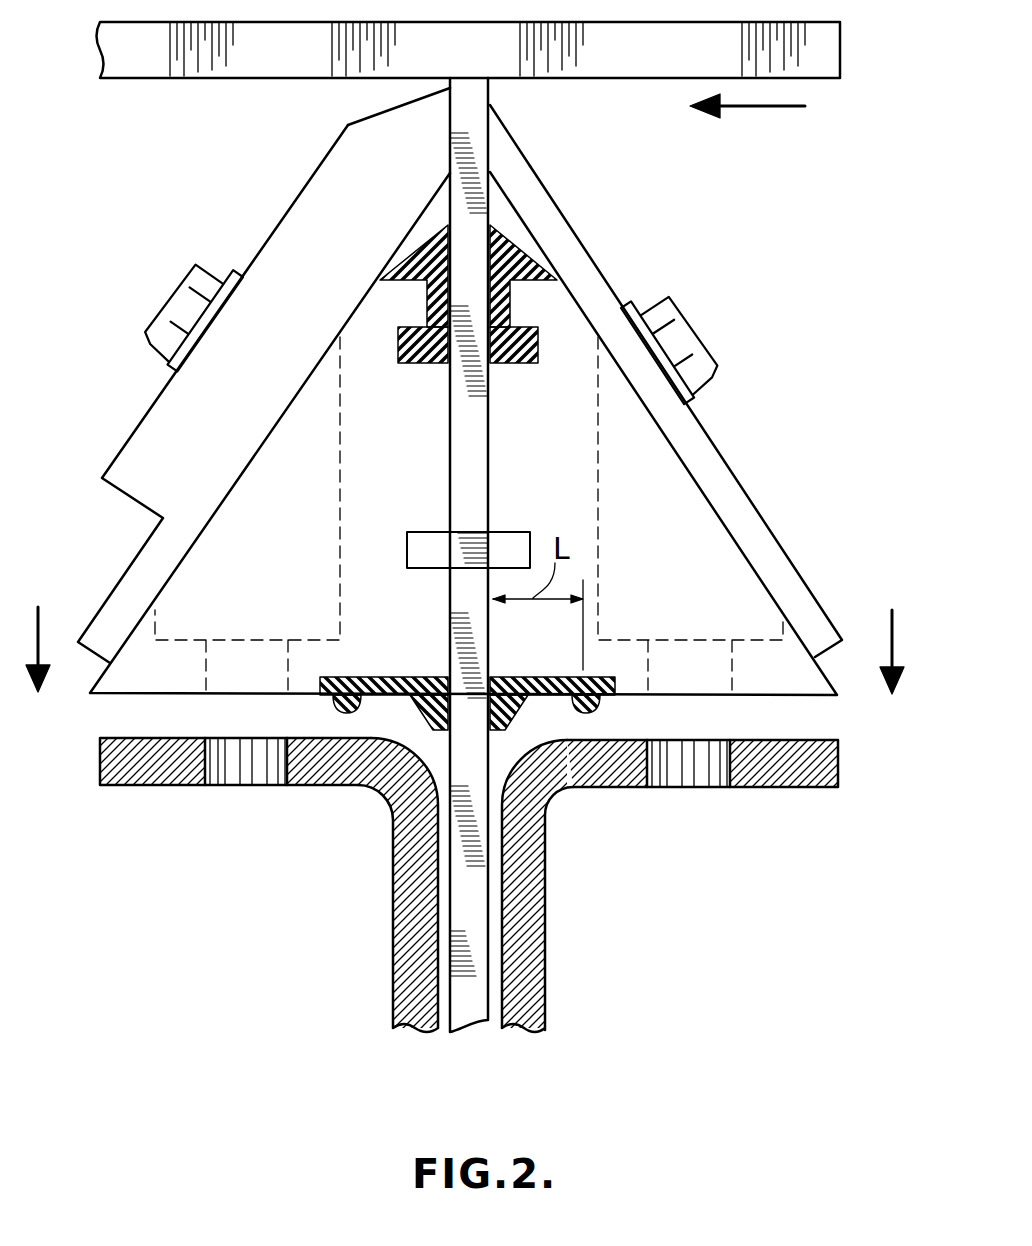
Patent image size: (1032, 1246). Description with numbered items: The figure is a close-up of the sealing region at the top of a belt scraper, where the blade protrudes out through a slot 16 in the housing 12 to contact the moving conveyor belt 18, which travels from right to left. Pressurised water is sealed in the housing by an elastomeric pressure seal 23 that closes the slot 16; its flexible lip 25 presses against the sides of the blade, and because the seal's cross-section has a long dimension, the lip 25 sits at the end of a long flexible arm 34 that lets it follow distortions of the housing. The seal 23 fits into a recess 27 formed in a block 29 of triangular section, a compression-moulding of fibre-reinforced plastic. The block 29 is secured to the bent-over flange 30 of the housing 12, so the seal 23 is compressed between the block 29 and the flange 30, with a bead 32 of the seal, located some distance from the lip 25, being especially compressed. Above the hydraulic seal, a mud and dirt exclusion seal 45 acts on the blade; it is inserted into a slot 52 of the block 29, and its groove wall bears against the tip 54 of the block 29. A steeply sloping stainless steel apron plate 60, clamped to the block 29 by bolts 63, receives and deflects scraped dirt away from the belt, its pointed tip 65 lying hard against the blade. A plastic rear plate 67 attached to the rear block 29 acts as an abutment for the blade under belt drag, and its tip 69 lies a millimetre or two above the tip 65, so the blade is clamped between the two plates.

The housing 12 is at (475, 947).
The slot 16 is at (490, 900).
The conveyor belt 18 is at (623, 80).
The pressure seal 23 is at (548, 690).
The flexible lip 25 is at (493, 740).
The recess 27 is at (347, 677).
The block 29 is at (395, 502).
The bent-over flange 30 is at (143, 772).
The bead 32 is at (345, 706).
The flexible arm 34 is at (385, 697).
The dirt seal 45 is at (537, 263).
The slot 52 is at (398, 345).
The tip 54 is at (523, 280).
The apron plate 60 is at (752, 532).
The bolts 63 is at (683, 305).
The pointed tip 65 is at (492, 103).
The rear plate 67 is at (292, 233).
The tip 69 is at (448, 85).